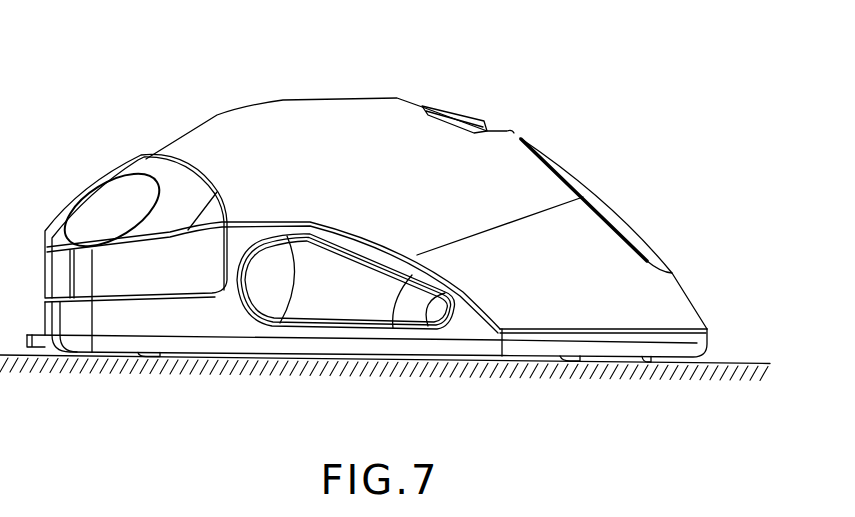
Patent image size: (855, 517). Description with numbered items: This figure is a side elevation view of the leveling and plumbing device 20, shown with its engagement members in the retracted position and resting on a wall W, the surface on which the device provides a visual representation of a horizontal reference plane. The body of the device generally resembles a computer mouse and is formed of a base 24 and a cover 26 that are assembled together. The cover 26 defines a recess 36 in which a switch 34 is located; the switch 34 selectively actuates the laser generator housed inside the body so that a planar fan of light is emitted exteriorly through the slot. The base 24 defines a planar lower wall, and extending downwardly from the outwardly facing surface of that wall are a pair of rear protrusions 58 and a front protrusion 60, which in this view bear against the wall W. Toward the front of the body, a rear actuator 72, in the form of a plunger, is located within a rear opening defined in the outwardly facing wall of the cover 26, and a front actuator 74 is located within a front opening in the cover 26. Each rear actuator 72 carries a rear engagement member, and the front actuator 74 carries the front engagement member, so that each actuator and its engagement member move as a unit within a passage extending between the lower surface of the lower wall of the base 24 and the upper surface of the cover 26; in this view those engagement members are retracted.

The leveling and plumbing device 20 is at (560, 74).
The base 24 is at (646, 363).
The cover 26 is at (346, 97).
The switch 34 is at (453, 117).
The recess 36 is at (500, 130).
The rear protrusions 58 is at (157, 358).
The front protrusion 60 is at (575, 362).
The rear actuator 72 is at (147, 156).
The front actuator 74 is at (626, 215).
The wall W is at (735, 360).